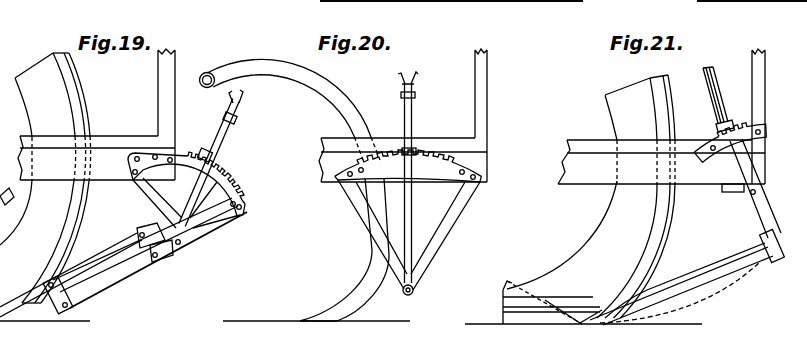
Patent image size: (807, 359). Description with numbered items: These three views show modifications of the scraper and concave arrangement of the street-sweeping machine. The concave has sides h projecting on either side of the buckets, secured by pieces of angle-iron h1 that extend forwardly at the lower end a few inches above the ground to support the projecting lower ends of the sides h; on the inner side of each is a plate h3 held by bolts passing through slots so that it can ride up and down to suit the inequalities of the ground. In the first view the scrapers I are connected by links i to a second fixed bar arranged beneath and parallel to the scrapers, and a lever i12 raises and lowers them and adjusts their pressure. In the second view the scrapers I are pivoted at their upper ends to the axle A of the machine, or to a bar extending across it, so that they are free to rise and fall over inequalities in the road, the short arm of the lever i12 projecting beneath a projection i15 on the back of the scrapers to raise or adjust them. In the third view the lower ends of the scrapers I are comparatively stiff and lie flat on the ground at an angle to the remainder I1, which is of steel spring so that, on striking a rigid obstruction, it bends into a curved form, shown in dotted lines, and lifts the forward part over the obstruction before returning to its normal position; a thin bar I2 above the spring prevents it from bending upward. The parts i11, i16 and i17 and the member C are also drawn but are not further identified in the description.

In FIG. 19, the sides of the concave h is at (38, 178).
In FIG. 21, the sides of the concave h is at (582, 198).
In FIG. 19, the angle-iron pieces h1 is at (85, 103).
In FIG. 21, the angle-iron pieces h1 is at (675, 114).
In FIG. 20, the side plate h3 is at (418, 8).
In FIG. 21, the side plate h3 is at (668, 2).
In FIG. 19, the toothed sector frame i17 is at (215, 155).
In FIG. 20, the toothed sector frame i17 is at (438, 173).
In FIG. 19, the lever i12 is at (229, 134).
In FIG. 20, the lever i12 is at (416, 129).
In FIG. 20, the rod sleeve i16 is at (404, 127).
In FIG. 20, the projection i15 is at (404, 285).
In FIG. 19, the pivot block i11 is at (157, 227).
In FIG. 19, the scrapers I is at (107, 251).
In FIG. 20, the scrapers I is at (353, 273).
In FIG. 21, the scrapers I is at (542, 302).
In FIG. 21, the spring portion of scraper I1 is at (687, 277).
In FIG. 21, the thin bar I2 is at (652, 290).
In FIG. 19, the links i is at (71, 275).
In FIG. 20, the main axle A is at (208, 72).
In FIG. 20, the frame beam C is at (403, 115).
In FIG. 21, the frame beam C is at (661, 116).